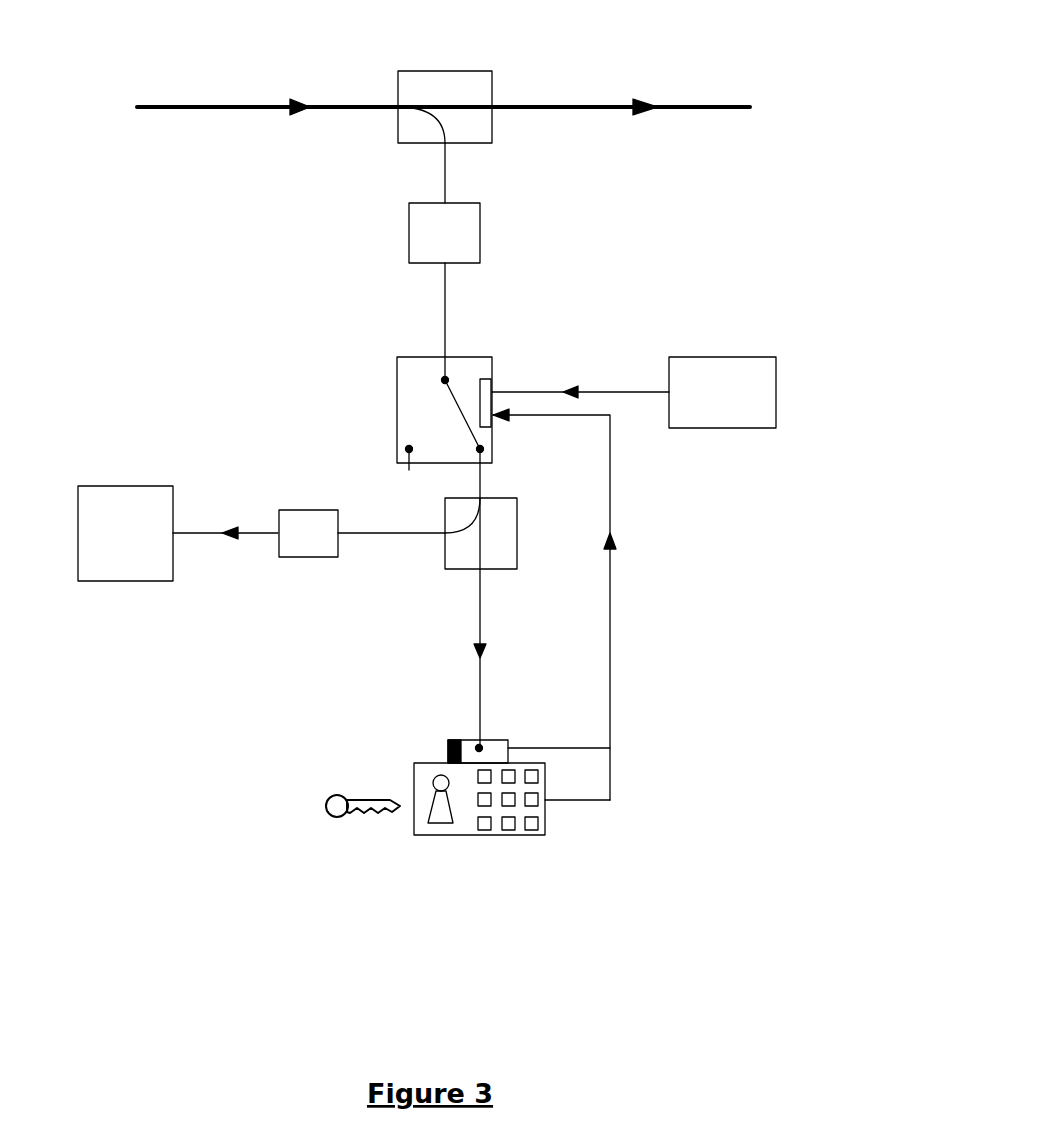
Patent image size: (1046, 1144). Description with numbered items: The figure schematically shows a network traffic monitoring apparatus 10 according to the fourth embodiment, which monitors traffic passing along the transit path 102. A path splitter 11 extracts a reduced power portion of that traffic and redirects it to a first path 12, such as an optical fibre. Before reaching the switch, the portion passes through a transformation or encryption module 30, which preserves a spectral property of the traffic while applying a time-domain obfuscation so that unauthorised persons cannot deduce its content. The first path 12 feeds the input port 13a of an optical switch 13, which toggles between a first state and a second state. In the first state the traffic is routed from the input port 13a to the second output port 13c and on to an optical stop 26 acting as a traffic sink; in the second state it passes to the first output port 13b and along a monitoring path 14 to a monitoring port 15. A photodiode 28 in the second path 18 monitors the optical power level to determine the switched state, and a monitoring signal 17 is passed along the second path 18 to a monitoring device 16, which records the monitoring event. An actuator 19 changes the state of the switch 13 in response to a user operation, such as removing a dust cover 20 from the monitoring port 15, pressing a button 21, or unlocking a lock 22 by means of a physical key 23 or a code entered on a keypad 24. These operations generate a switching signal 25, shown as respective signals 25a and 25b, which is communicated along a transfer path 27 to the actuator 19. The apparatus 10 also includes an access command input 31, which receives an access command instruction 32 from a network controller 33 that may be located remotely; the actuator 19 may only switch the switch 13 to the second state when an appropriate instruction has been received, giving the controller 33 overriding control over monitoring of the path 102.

The network traffic monitoring apparatus 10 is at (716, 578).
The path splitter 11 is at (492, 83).
The transit path 102 is at (658, 103).
The encryption module 30 is at (409, 215).
The first path 12 is at (445, 300).
The optical switch 13 is at (467, 357).
The input port 13a is at (445, 380).
The first output port 13b is at (473, 457).
The second output port 13c is at (409, 449).
The optical stop 26 is at (409, 470).
The access command input 31 is at (493, 391).
The access command instruction 32 is at (580, 381).
The network controller device 33 is at (722, 392).
The actuator 19 is at (490, 418).
The switching signal 25 is at (576, 607).
The switching signal 25a is at (564, 762).
The switching signal 25b is at (583, 816).
The monitoring device 16 is at (125, 533).
The monitoring signal 17 is at (225, 518).
The photodiode 28 is at (303, 510).
The second path 18 is at (397, 535).
The transfer path 27 is at (517, 557).
The monitoring path 14 is at (480, 613).
The dust cover 20 is at (508, 740).
The button 21 is at (448, 740).
The monitoring port 15 is at (481, 746).
The lock 22 is at (442, 823).
The keypad 24 is at (507, 823).
The physical key 23 is at (327, 797).